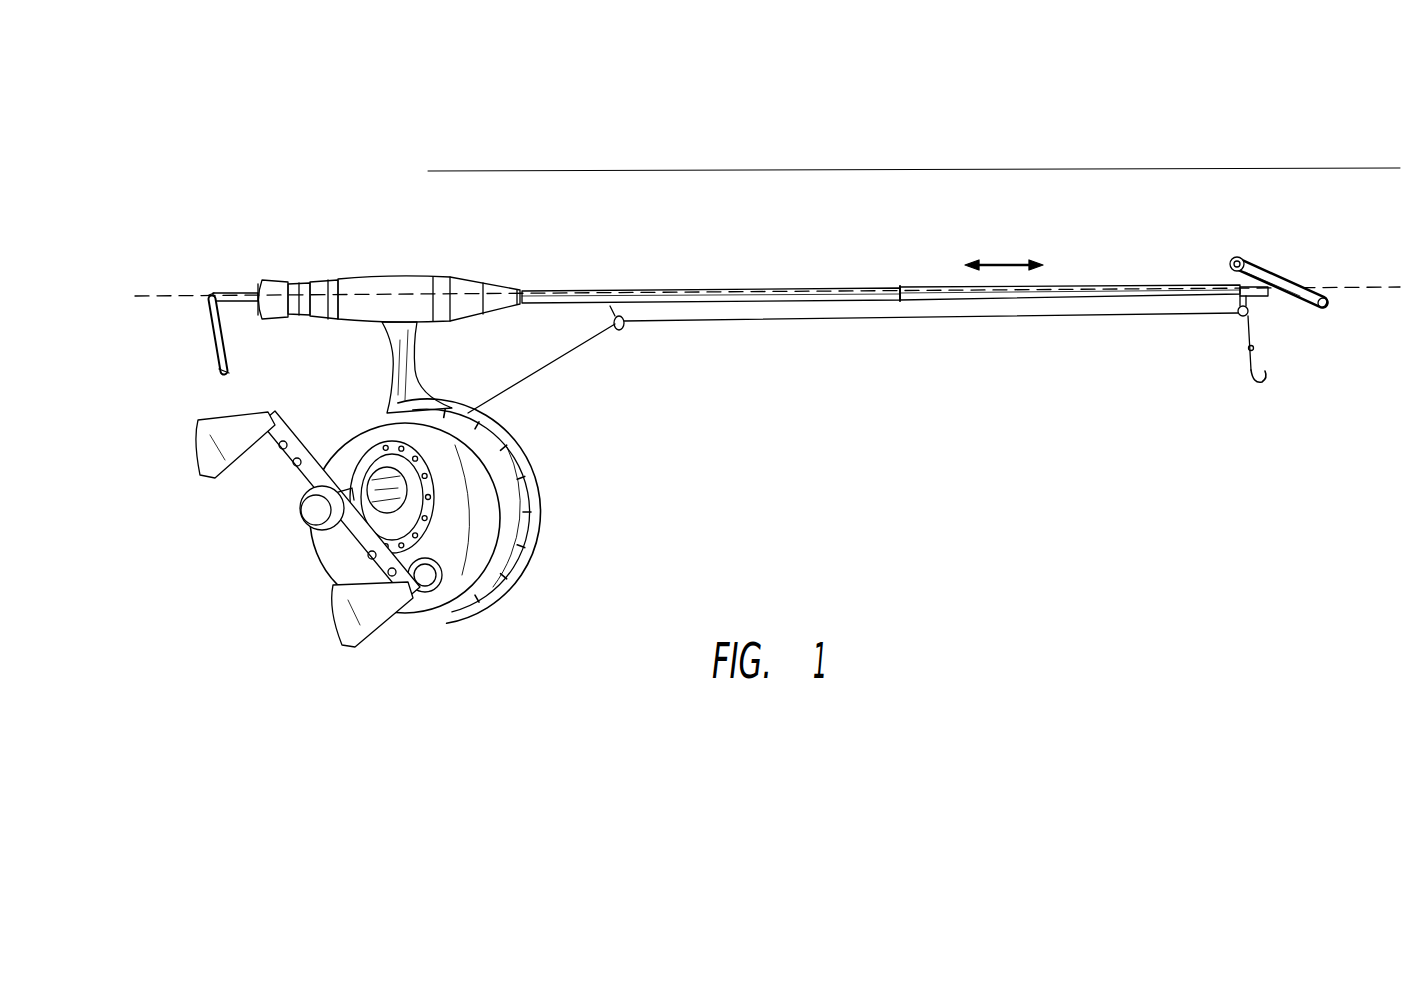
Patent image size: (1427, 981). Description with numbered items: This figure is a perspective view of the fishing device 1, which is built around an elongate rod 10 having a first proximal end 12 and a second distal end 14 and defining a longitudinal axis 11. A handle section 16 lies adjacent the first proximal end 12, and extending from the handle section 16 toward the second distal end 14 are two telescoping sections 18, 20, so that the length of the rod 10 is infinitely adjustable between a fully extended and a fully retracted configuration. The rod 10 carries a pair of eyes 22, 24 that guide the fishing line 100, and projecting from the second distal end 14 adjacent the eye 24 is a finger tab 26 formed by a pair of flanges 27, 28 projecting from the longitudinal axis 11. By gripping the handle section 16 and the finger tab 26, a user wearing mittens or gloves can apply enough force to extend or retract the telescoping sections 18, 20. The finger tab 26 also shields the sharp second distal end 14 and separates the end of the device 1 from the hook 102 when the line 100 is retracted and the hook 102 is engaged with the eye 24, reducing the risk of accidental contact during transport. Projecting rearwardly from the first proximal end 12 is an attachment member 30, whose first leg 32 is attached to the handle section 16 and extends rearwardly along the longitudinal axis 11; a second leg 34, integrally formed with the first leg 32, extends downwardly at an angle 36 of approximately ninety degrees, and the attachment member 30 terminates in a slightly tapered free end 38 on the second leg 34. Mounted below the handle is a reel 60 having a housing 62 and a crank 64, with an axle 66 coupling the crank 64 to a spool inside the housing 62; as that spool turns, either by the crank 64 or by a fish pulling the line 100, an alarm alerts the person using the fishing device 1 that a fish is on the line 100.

The fishing device 1 is at (881, 219).
The elongate rod 10 is at (881, 219).
The longitudinal axis 11 is at (175, 292).
The first proximal end 12 is at (258, 287).
The second distal end 14 is at (1258, 297).
The handle section 16 is at (388, 274).
The telescoping section 18 is at (695, 288).
The telescoping section 20 is at (1097, 288).
The eye 22 is at (623, 328).
The eye 24 is at (1240, 315).
The finger tab 26 is at (1291, 273).
The flange 27 is at (1232, 258).
The flange 28 is at (1329, 308).
The attachment member 30 is at (222, 358).
The first leg 32 is at (225, 292).
The second leg 34 is at (214, 345).
The angle 36 is at (216, 302).
The free end 38 is at (229, 374).
The reel 60 is at (438, 515).
The housing 62 is at (455, 565).
The crank 64 is at (308, 551).
The axle 66 is at (315, 528).
The fishing line 100 is at (970, 320).
The hook 102 is at (1262, 378).